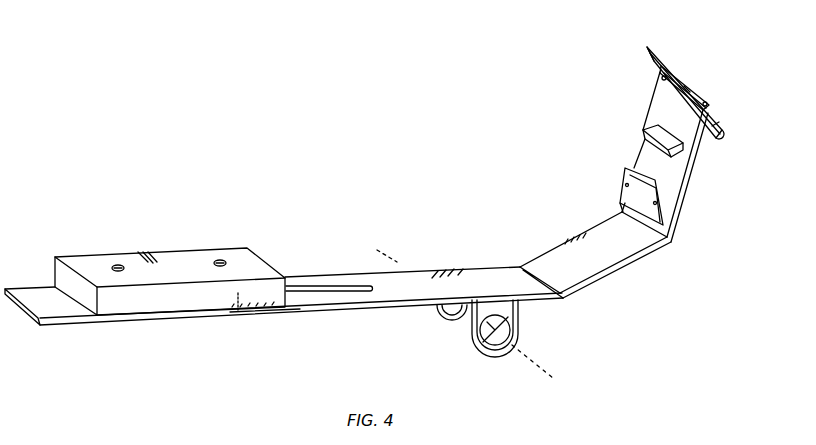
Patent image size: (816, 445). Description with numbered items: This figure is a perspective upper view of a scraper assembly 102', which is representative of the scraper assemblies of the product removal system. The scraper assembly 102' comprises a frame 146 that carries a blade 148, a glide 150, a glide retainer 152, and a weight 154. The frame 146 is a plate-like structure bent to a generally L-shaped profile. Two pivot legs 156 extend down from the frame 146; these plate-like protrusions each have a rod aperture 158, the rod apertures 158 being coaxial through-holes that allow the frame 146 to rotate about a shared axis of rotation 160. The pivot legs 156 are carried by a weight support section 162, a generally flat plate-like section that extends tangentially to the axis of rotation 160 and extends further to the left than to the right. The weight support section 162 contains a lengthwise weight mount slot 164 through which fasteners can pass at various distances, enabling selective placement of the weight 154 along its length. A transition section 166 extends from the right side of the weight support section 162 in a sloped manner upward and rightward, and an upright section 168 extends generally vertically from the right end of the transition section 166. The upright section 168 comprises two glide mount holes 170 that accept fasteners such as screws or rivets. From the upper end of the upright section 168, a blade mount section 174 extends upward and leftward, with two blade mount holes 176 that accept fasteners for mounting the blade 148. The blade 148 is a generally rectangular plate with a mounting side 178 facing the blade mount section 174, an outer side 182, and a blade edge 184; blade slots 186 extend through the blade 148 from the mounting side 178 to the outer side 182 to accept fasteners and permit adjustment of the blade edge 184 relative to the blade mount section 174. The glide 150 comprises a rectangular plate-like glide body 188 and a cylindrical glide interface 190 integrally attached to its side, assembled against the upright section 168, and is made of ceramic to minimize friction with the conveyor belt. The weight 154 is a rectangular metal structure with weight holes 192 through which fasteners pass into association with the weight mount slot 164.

The scraper assembly 102' is at (414, 197).
The frame 146 is at (562, 300).
The blade 148 is at (727, 133).
The glide 150 is at (688, 174).
The glide retainer 152 is at (625, 178).
The weight 154 is at (203, 247).
The pivot legs 156 is at (445, 316).
The rod aperture 158 is at (437, 315).
The axis of rotation 160 is at (540, 367).
The weight support section 162 is at (285, 314).
The weight mount slot 164 is at (309, 288).
The transition section 166 is at (641, 264).
The upright section 168 is at (675, 228).
The glide mount holes 170 is at (672, 216).
The blade mount section 174 is at (658, 93).
The blade mount holes 176 is at (662, 77).
The mounting side 178 is at (658, 46).
The outer side 182 is at (710, 97).
The blade edge 184 is at (676, 62).
The blade slots 186 is at (719, 124).
The glide body 188 is at (676, 188).
The glide interface 190 is at (652, 126).
The weight holes 192 is at (118, 264).